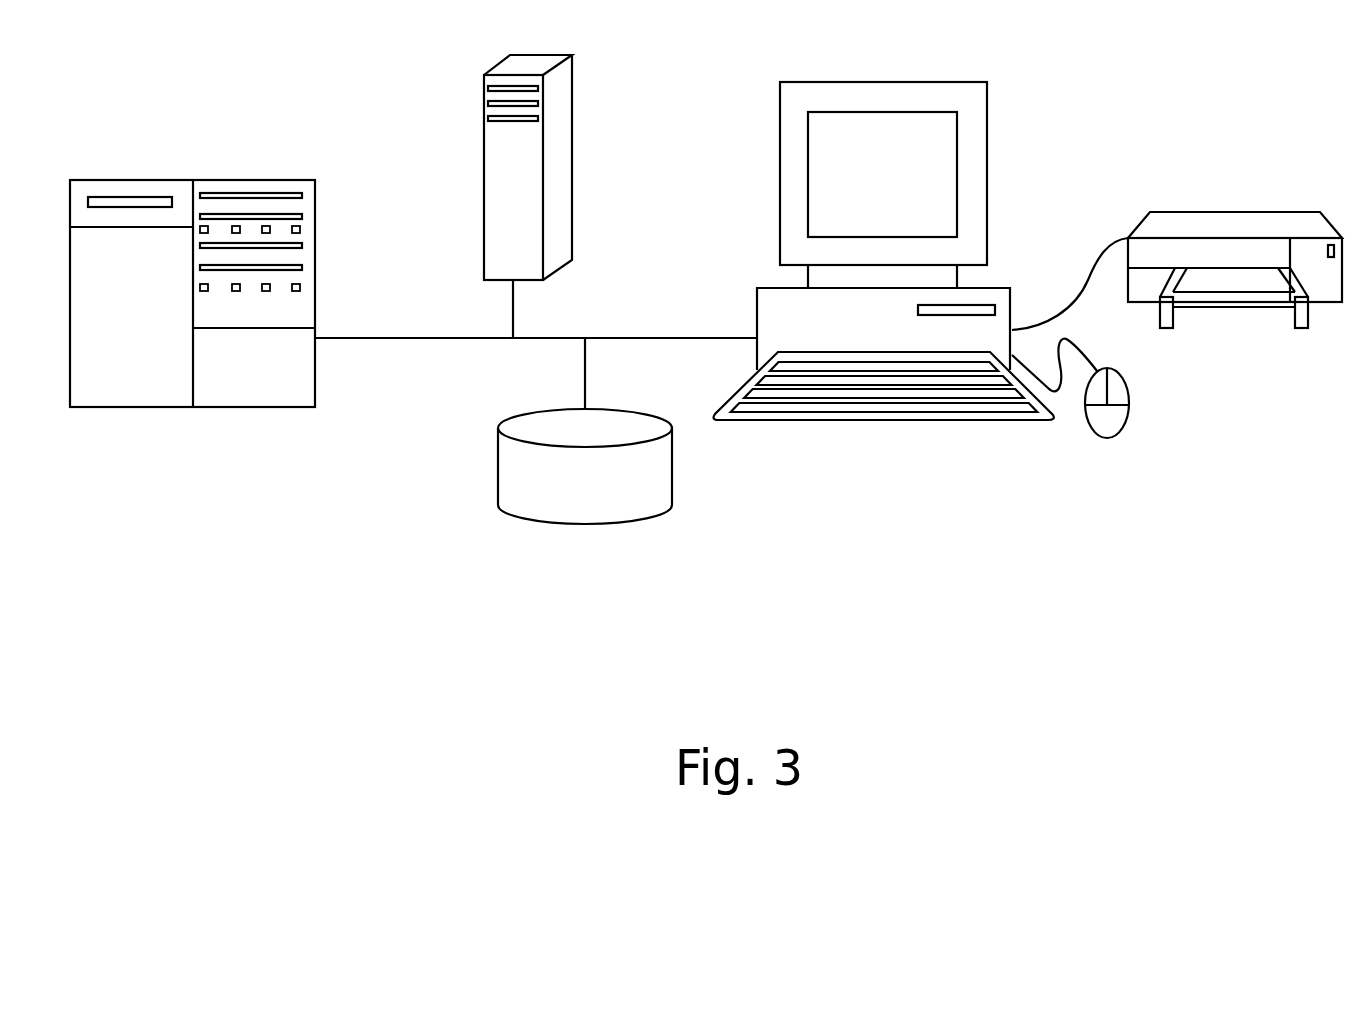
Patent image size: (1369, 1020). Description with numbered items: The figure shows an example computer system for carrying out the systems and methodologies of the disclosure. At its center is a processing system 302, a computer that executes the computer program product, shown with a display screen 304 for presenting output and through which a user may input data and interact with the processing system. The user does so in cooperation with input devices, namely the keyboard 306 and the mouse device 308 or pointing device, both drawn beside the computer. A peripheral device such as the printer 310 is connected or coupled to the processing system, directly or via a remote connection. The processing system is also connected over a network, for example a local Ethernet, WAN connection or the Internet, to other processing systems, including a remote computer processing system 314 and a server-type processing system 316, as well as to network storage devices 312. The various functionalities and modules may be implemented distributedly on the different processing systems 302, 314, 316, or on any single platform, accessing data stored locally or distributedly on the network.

The processing system 302 is at (763, 318).
The display screen 304 is at (988, 168).
The keyboard 306 is at (950, 420).
The mouse device 308 is at (1128, 410).
The printer 310 is at (1235, 212).
The network storage devices 312 is at (605, 522).
The remote computer processing system 314 is at (573, 155).
The processing system 316 is at (242, 180).